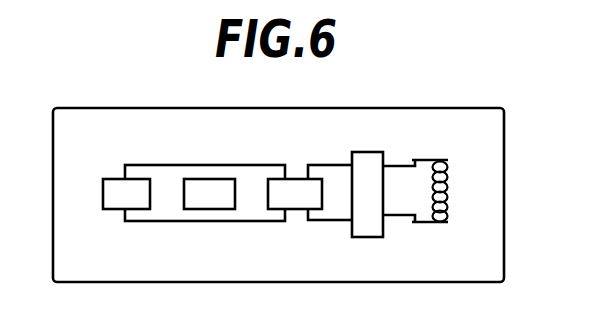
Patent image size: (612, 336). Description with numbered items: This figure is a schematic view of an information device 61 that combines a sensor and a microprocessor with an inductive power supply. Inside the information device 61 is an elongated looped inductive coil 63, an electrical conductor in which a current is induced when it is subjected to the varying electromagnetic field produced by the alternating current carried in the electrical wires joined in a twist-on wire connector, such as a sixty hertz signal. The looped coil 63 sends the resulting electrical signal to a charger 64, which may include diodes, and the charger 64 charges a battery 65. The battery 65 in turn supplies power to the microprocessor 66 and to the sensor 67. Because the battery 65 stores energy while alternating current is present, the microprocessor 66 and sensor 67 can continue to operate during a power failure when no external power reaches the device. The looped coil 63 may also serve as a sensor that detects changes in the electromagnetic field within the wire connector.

The information device 61 is at (322, 108).
The looped inductive coil 63 is at (446, 164).
The charger 64 is at (367, 237).
The battery 65 is at (297, 216).
The microprocessor 66 is at (215, 203).
The sensor 67 is at (114, 210).